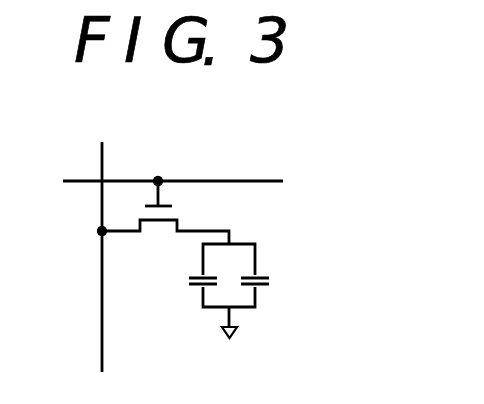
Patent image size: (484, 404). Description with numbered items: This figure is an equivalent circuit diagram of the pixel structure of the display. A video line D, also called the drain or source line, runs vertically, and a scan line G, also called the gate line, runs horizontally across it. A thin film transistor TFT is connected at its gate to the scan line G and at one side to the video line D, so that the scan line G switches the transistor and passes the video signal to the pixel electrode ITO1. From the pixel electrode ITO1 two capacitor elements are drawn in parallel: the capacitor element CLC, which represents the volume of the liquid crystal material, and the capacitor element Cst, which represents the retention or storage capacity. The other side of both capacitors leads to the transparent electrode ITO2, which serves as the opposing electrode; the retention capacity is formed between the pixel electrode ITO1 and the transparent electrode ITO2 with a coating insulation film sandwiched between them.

The video line D is at (92, 247).
The scan line G is at (173, 164).
The thin film transistor TFT is at (180, 217).
The pixel electrode ITO1 is at (249, 243).
The transparent electrode ITO2 is at (238, 341).
The capacitor element CLC is at (175, 277).
The capacitor element Cst is at (285, 277).